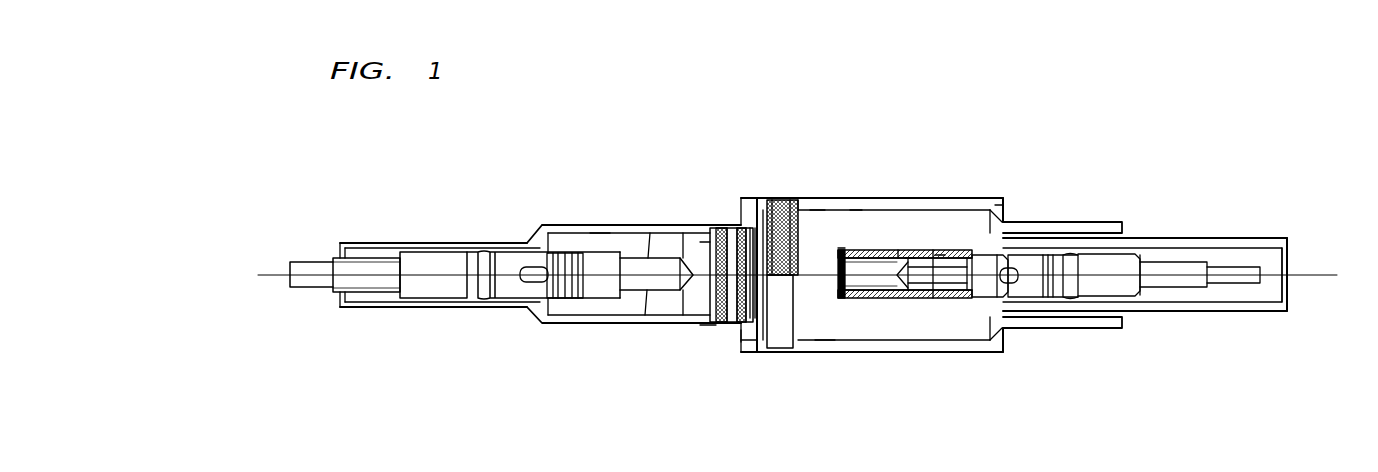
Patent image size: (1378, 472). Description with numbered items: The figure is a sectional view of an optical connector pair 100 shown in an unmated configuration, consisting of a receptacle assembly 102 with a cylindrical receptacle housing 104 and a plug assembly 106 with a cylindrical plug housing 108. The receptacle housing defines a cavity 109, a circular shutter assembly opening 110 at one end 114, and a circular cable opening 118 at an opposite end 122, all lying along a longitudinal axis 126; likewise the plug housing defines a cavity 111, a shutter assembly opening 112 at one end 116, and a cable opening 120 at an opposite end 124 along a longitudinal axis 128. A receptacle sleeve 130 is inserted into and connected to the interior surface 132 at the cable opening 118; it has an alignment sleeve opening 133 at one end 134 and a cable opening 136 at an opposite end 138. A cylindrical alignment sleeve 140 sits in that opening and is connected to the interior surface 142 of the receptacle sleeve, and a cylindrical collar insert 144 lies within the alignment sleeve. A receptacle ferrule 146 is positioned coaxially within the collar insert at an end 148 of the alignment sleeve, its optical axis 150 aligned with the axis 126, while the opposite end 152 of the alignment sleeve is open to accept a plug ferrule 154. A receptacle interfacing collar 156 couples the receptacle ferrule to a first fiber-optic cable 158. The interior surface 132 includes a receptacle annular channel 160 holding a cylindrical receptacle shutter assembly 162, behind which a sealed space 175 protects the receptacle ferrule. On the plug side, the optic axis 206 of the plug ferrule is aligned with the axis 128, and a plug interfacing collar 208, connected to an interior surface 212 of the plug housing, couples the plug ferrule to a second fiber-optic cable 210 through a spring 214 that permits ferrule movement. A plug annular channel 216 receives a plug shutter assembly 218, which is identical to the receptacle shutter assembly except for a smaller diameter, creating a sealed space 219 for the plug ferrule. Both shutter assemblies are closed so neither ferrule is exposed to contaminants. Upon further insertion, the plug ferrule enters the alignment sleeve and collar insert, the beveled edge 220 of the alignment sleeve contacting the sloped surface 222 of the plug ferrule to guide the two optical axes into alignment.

The optical connector pair 100 is at (947, 93).
The receptacle assembly 102 is at (1075, 148).
The receptacle housing 104 is at (922, 252).
The plug assembly 106 is at (572, 176).
The plug housing 108 is at (560, 226).
The cavity 109 is at (887, 322).
The shutter assembly opening 110 is at (738, 342).
The cavity 111 is at (600, 240).
The shutter assembly opening 112 is at (760, 200).
The one end 114 is at (745, 342).
The one end 116 is at (714, 332).
The cable opening 118 is at (1138, 237).
The cable opening 120 is at (330, 241).
The opposite end 122 is at (1125, 222).
The opposite end 124 is at (352, 243).
The longitudinal axis 126 is at (840, 248).
The longitudinal axis 128 is at (703, 242).
The receptacle sleeve 130 is at (1240, 238).
The interior surface 132 is at (1085, 312).
The alignment sleeve opening 133 is at (898, 250).
The one end 134 is at (910, 258).
The cable opening 136 is at (1290, 248).
The opposite end 138 is at (1283, 238).
The alignment sleeve 140 is at (900, 300).
The interior surface 142 is at (975, 305).
The collar insert 144 is at (878, 300).
The receptacle ferrule 146 is at (933, 300).
The end 148 is at (1000, 205).
The optical axis 150 is at (940, 255).
The opposite end 152 is at (825, 325).
The plug ferrule 154 is at (640, 324).
The receptacle interfacing collar 156 is at (1030, 300).
The first fiber-optic cable 158 is at (1233, 285).
The receptacle annular channel 160 is at (787, 348).
The receptacle shutter assembly 162 is at (804, 183).
The sealed space 175 is at (817, 198).
The optic axis 206 is at (648, 235).
The plug interfacing collar 208 is at (432, 284).
The second fiber-optic cable 210 is at (313, 290).
The interior surface 212 is at (377, 298).
The spring 214 is at (550, 323).
The plug annular channel 216 is at (713, 325).
The plug shutter assembly 218 is at (742, 200).
The sealed space 219 is at (700, 298).
The beveled edge 220 is at (857, 198).
The sloped surface 222 is at (685, 228).